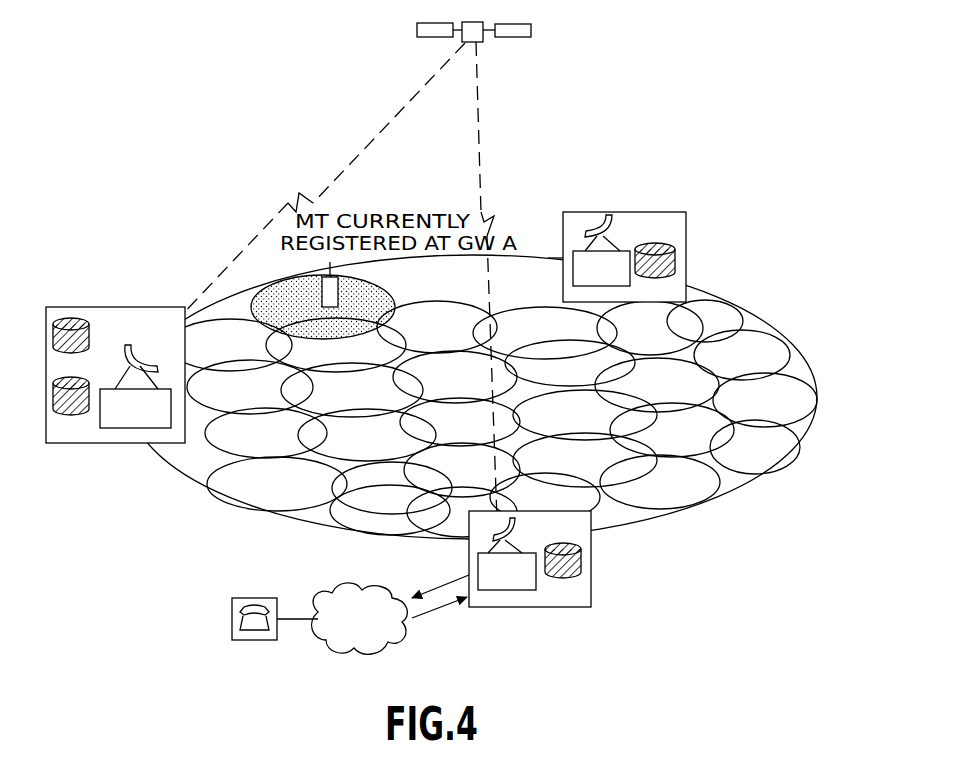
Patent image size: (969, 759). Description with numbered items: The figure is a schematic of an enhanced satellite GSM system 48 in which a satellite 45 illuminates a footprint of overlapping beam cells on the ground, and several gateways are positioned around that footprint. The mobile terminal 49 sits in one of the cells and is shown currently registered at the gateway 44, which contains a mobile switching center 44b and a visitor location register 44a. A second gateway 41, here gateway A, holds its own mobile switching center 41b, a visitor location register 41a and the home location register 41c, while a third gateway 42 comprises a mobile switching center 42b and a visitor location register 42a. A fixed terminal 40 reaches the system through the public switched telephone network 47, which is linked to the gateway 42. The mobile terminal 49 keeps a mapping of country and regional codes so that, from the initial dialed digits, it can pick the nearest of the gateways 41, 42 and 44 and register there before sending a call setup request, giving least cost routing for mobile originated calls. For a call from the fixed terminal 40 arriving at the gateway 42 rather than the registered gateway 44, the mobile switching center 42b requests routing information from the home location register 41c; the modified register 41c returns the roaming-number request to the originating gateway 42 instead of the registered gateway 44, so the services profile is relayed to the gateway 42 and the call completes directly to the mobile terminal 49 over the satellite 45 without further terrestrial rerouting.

The fixed terminal 40 is at (265, 641).
The gateway 41 is at (111, 385).
The location register 41a is at (73, 318).
The mobile switching center of gateway A 41b is at (137, 429).
The home location register 41c is at (70, 415).
The gateway 42 is at (569, 579).
The visitor location register 42a is at (583, 562).
The mobile switching center 42b is at (505, 591).
The gateway 44 is at (648, 233).
The visitor location register 44a is at (676, 257).
The mobile switching center 44b is at (598, 214).
The satellite 45 is at (532, 32).
The public switched telephone network 47 is at (403, 648).
The enhanced satellite GSM system 48 is at (218, 153).
The mobile terminal 49 is at (320, 290).